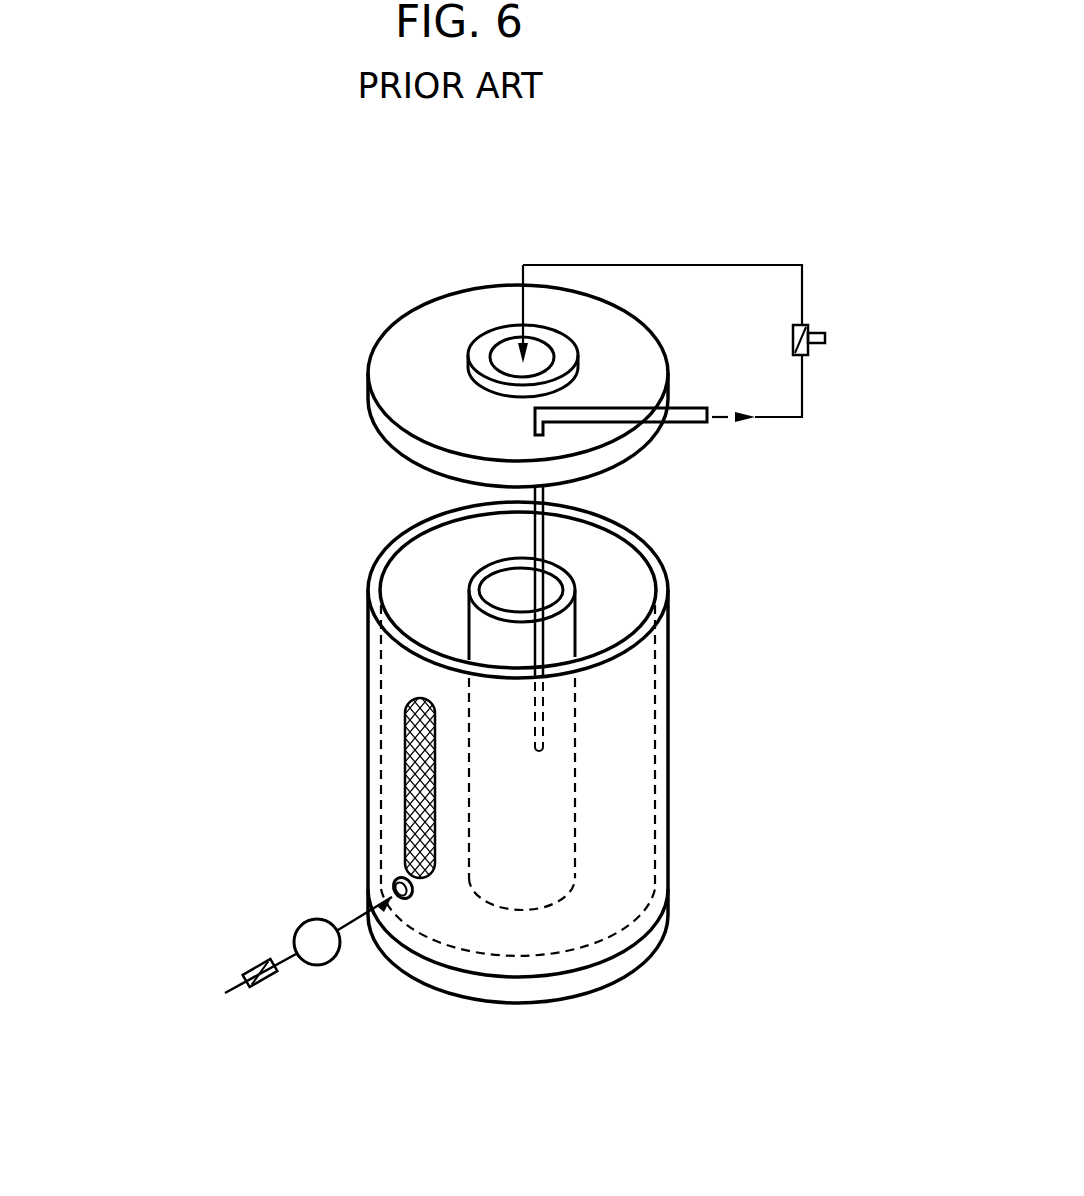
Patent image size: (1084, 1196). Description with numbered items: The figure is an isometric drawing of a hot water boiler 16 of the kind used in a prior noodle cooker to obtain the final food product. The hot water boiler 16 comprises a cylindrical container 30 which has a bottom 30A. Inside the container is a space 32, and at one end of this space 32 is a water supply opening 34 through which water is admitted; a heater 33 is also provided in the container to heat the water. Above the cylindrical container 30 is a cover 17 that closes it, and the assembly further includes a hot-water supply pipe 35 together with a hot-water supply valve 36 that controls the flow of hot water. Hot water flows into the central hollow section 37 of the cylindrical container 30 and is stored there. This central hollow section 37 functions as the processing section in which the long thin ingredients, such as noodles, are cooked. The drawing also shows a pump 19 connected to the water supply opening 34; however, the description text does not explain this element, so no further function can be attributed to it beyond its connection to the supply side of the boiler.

The hot water boiler 16 is at (280, 378).
The cover 17 is at (448, 322).
The pump 19 is at (322, 965).
The cylindrical container 30 is at (366, 660).
The bottom 30A is at (600, 967).
The space 32 is at (638, 582).
The heater 33 is at (412, 780).
The water supply opening 34 is at (395, 880).
The hot-water supply pipe 35 is at (690, 425).
The hot-water supply valve 36 is at (808, 325).
The central hollow section 37 is at (512, 578).